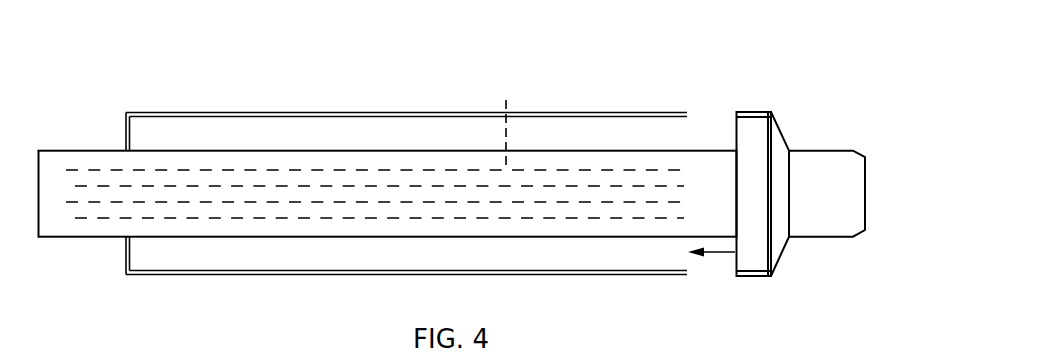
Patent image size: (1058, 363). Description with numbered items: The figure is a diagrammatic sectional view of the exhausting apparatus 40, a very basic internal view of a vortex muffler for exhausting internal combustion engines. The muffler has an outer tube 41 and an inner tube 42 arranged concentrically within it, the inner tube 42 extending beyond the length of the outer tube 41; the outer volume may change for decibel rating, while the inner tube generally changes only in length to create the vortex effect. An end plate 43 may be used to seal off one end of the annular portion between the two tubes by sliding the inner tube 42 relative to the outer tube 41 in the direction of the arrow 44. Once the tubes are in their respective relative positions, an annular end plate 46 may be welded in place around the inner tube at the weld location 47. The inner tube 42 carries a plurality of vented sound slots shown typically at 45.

The exhausting apparatus 40 is at (713, 64).
The outer tube 41 is at (617, 272).
The inner tube 42 is at (463, 237).
The end plate 43 is at (780, 253).
The arrow 44 is at (710, 252).
The vented sound slots 45 is at (517, 81).
The annular end plate 46 is at (126, 133).
The weld location 47 is at (127, 238).